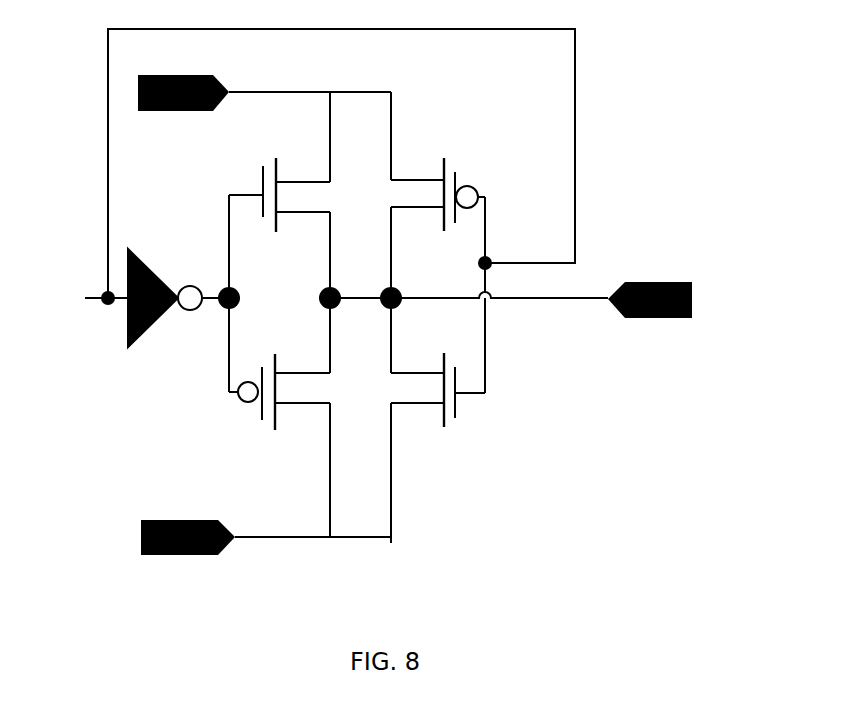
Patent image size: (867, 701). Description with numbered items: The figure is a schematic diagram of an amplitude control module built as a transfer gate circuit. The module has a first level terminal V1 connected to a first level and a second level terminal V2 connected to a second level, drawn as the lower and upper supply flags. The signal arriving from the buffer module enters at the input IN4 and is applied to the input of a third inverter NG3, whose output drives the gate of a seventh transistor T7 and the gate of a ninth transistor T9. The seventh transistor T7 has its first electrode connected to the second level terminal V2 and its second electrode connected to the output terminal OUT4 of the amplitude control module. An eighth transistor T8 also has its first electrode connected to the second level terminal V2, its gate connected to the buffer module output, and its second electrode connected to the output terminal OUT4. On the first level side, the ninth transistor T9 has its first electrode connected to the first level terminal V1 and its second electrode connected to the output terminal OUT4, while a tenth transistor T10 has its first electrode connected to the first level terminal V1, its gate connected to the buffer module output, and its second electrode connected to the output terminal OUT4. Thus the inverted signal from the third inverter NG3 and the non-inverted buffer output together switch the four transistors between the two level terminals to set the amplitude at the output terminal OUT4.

The third inverter NG3 is at (165, 308).
The seventh transistor T7 is at (278, 194).
The eighth transistor T8 is at (446, 194).
The ninth transistor T9 is at (272, 403).
The tenth transistor T10 is at (441, 402).
The first level terminal V1 is at (188, 557).
The second level terminal V2 is at (183, 77).
The input terminal IN4 is at (62, 296).
The output terminal of the amplitude control module OUT4 is at (682, 300).